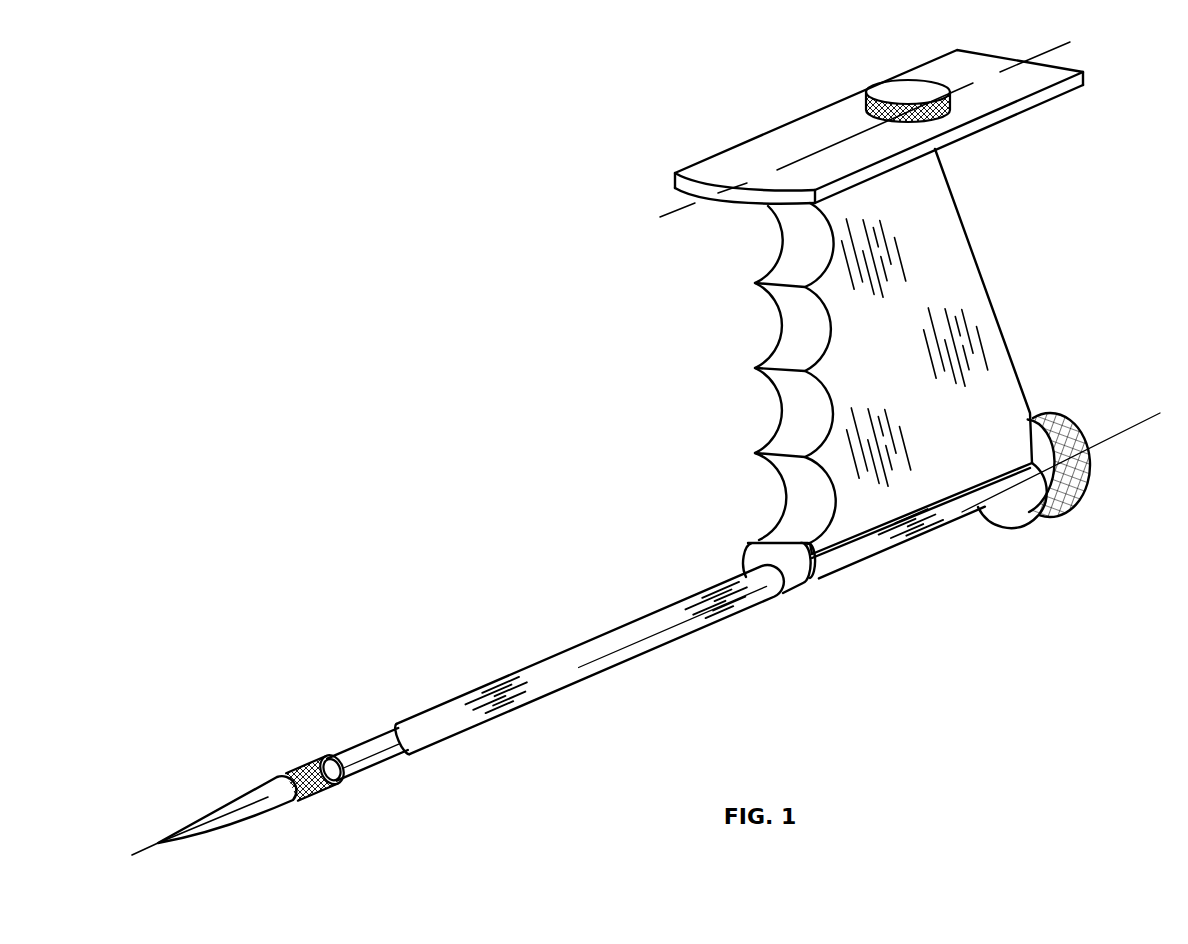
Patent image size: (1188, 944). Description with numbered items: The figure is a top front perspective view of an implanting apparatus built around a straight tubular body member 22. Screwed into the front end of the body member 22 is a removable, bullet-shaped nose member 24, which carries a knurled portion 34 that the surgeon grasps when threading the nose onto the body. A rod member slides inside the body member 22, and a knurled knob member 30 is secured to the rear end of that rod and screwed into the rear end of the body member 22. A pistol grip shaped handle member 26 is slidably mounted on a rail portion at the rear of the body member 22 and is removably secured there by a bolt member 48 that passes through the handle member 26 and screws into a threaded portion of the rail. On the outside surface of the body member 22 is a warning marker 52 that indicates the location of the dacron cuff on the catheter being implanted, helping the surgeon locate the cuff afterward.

The tubular body member 22 is at (594, 688).
The nose member 24 is at (230, 784).
The handle member 26 is at (762, 406).
The knurled knob member 30 is at (1046, 543).
The knurled portion 34 is at (329, 796).
The bolt member 48 is at (906, 92).
The warning marker 52 is at (418, 709).